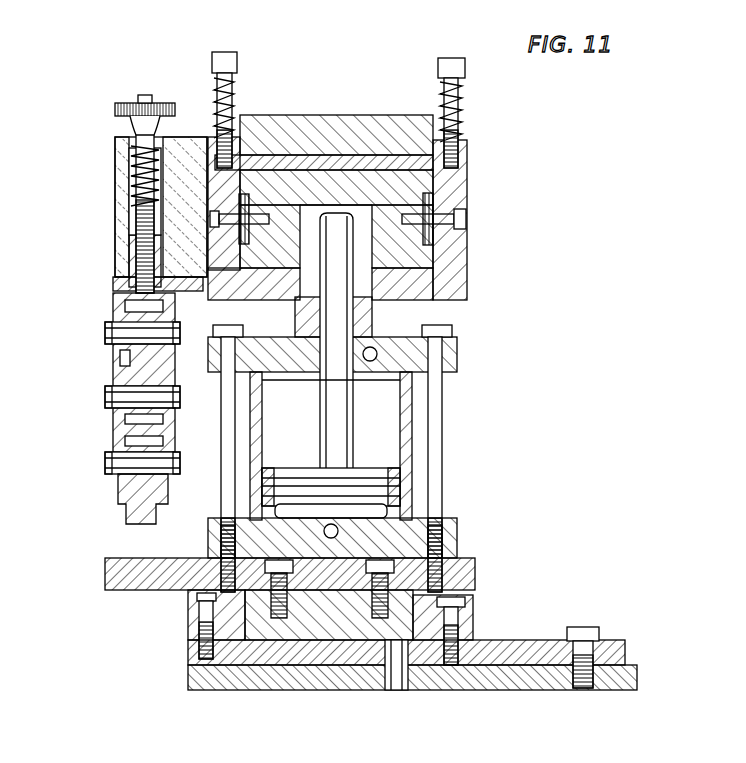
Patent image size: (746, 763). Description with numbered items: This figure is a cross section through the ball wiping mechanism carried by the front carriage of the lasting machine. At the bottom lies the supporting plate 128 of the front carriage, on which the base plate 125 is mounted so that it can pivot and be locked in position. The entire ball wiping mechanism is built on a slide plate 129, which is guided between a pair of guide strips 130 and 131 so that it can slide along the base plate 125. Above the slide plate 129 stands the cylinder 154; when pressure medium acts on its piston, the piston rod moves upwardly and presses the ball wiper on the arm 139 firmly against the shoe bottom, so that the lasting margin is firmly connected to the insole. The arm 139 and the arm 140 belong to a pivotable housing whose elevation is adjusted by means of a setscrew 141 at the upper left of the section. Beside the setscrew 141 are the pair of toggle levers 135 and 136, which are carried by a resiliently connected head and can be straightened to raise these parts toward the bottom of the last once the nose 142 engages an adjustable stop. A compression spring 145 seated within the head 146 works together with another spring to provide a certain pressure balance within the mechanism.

The base plate 125 is at (618, 653).
The supporting plate 128 is at (512, 672).
The slide plate 129 is at (337, 625).
The guide strip 130 is at (475, 622).
The guide strip 131 is at (190, 618).
The toggle lever 135 is at (118, 368).
The toggle lever 136 is at (116, 432).
The arm 139 is at (423, 183).
The arm 140 is at (425, 255).
The setscrew 141 is at (125, 108).
The nose 142 is at (118, 500).
The compression spring 145 is at (128, 172).
The head 146 is at (120, 247).
The cylinder 154 is at (410, 405).